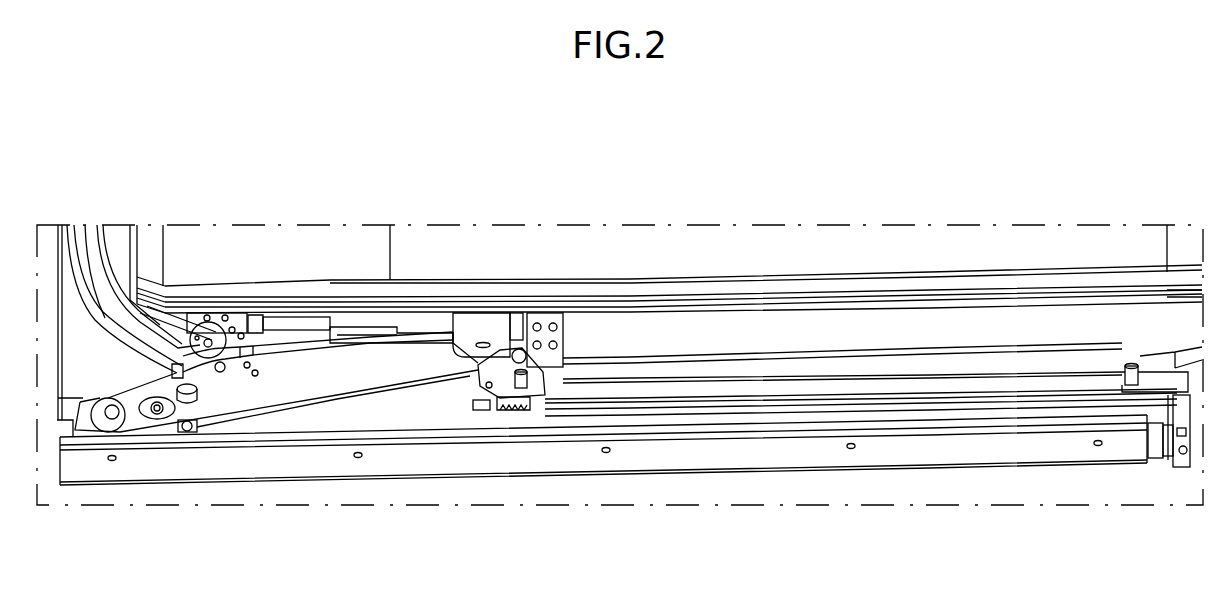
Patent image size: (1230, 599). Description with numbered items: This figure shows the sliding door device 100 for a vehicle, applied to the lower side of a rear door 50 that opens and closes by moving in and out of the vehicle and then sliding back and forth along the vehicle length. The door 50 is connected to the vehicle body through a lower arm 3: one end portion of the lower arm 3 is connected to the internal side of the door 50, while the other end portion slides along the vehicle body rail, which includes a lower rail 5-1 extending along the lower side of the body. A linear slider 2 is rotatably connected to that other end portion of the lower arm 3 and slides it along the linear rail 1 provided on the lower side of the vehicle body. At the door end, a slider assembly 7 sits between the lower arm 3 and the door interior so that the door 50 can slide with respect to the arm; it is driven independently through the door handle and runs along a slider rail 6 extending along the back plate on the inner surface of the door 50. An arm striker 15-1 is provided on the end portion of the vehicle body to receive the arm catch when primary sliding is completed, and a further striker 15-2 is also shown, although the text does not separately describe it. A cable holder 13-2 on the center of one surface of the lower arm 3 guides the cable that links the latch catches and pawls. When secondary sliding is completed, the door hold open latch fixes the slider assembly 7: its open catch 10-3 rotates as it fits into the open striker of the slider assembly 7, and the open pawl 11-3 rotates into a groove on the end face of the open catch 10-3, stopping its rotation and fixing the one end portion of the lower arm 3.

The door opening and closing device 100 is at (670, 137).
The linear rail 1 is at (166, 470).
The linear slider 2 is at (85, 428).
The lower arm 3 is at (245, 390).
The lower rail 5-1 is at (657, 410).
The slider rail 6 is at (418, 315).
The slider assembly 7 is at (512, 410).
The open catch 10-3 is at (186, 316).
The open pawl 11-3 is at (230, 318).
The cable holder 13-2 is at (463, 410).
The arm striker 15-1 is at (1125, 365).
The second stopper 15-2 is at (517, 357).
The door 50 is at (757, 246).